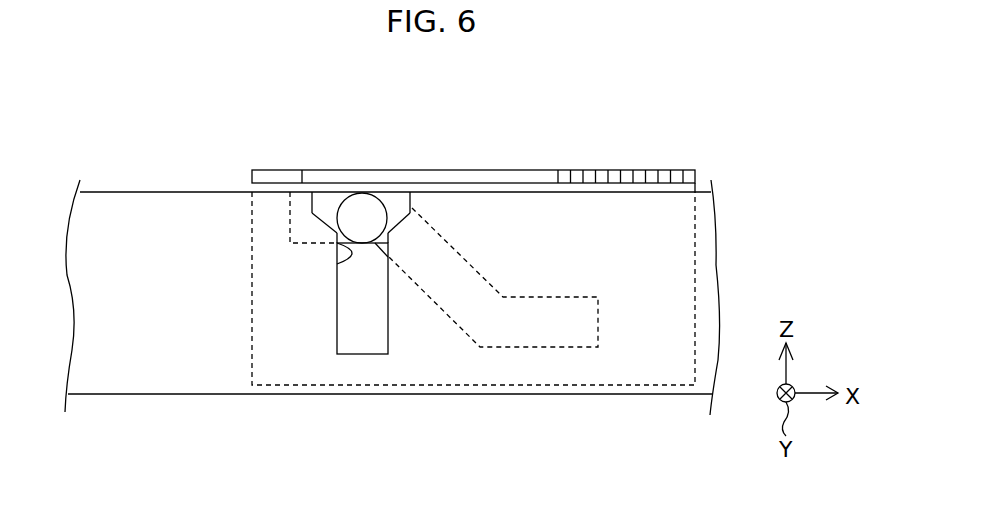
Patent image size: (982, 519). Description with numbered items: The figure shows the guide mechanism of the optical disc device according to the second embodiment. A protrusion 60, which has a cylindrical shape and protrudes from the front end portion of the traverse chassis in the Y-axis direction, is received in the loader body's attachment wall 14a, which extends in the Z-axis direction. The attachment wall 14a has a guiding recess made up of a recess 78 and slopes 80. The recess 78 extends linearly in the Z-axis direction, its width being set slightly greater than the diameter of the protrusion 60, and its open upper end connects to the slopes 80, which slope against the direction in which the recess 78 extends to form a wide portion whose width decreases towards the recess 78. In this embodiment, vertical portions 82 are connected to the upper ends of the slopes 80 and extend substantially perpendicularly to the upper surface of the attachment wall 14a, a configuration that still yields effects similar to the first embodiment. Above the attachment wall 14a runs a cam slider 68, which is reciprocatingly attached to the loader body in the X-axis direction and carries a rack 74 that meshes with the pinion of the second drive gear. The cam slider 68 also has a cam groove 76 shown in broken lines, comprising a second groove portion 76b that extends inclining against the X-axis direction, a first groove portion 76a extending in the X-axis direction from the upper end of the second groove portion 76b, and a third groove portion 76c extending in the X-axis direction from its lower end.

The attachment wall 14a is at (700, 286).
The protrusion 60 is at (363, 218).
The cam slider 68 is at (483, 171).
The rack 74 is at (633, 173).
The cam groove 76 is at (578, 415).
The first groove portion 76a is at (304, 237).
The second groove portion 76b is at (415, 278).
The third groove portion 76c is at (530, 346).
The recess 78 is at (337, 236).
The slopes 80 is at (326, 221).
The vertical portions 82 is at (313, 210).